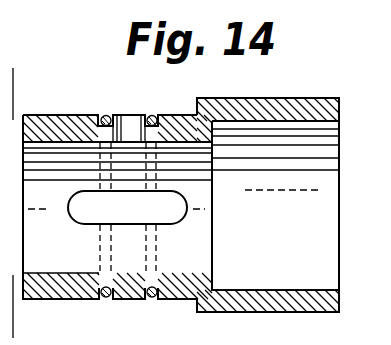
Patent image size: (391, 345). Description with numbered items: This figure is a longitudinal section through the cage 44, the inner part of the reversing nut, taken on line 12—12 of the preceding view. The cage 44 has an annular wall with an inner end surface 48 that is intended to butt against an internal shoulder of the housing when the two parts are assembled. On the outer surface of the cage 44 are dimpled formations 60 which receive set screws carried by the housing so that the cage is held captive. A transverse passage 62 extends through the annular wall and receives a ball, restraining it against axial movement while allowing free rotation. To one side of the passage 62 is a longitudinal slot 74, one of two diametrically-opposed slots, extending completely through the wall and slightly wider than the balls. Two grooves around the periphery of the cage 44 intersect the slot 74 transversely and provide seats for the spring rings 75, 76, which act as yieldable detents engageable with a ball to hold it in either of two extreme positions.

The section line 12— 12 is at (45, 327).
The cage 44 is at (176, 307).
The inner end surface 48 is at (29, 287).
The dimpled formations 60 is at (272, 97).
The transverse passage 62 is at (126, 114).
The longitudinal slot 74 is at (125, 227).
The spring ring 75 is at (106, 114).
The spring ring 76 is at (151, 114).